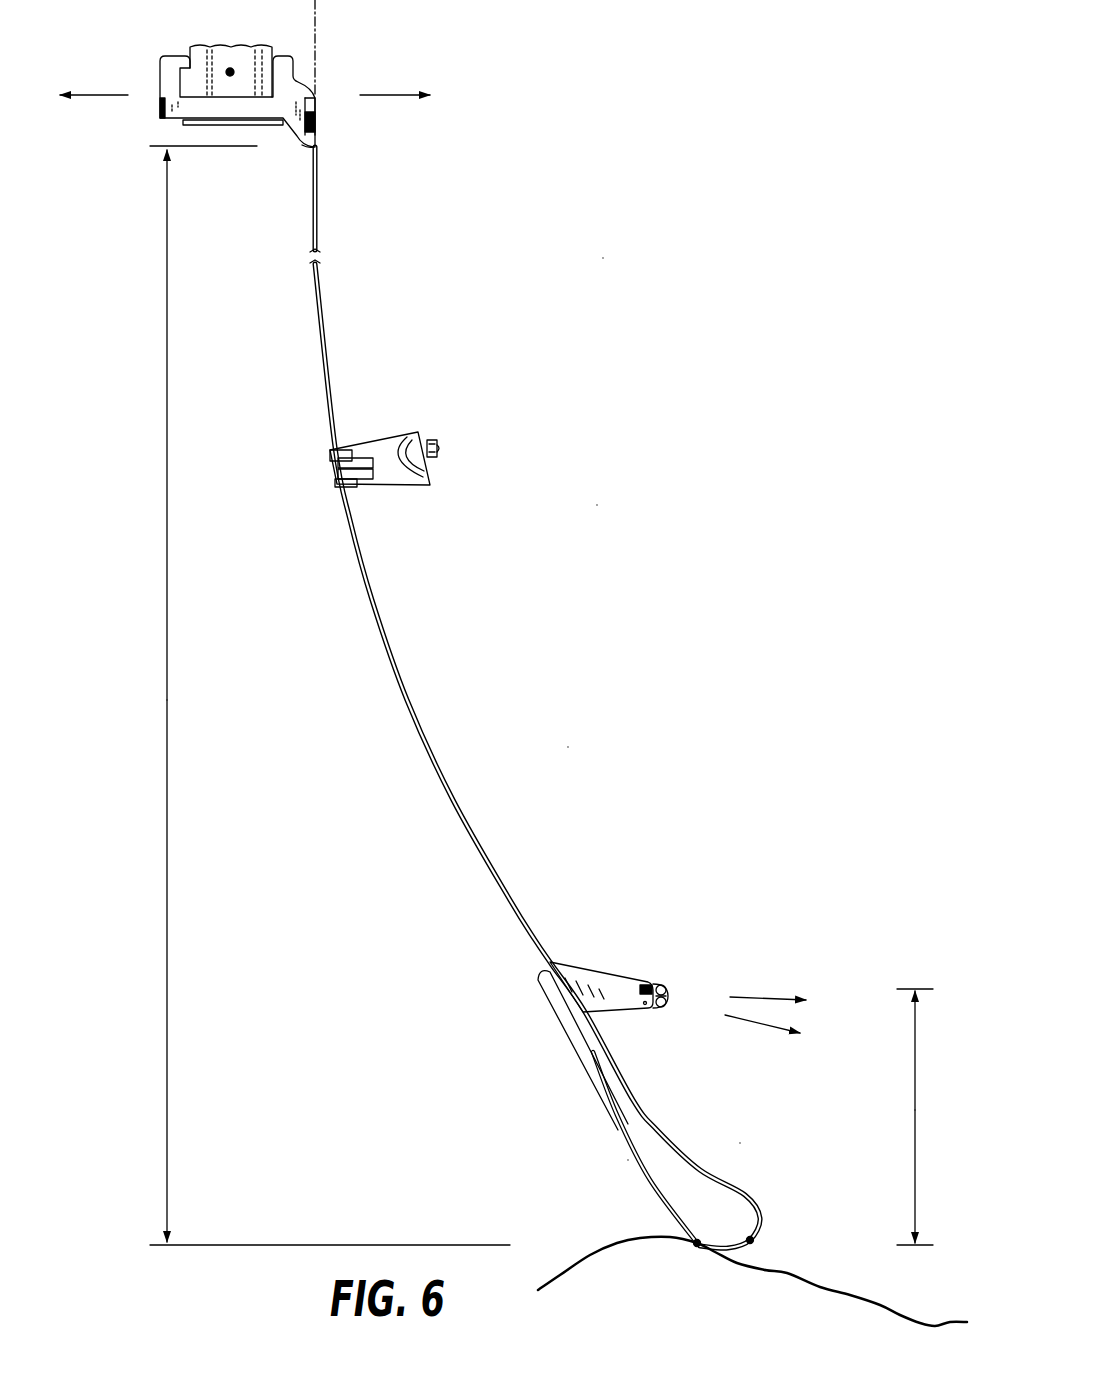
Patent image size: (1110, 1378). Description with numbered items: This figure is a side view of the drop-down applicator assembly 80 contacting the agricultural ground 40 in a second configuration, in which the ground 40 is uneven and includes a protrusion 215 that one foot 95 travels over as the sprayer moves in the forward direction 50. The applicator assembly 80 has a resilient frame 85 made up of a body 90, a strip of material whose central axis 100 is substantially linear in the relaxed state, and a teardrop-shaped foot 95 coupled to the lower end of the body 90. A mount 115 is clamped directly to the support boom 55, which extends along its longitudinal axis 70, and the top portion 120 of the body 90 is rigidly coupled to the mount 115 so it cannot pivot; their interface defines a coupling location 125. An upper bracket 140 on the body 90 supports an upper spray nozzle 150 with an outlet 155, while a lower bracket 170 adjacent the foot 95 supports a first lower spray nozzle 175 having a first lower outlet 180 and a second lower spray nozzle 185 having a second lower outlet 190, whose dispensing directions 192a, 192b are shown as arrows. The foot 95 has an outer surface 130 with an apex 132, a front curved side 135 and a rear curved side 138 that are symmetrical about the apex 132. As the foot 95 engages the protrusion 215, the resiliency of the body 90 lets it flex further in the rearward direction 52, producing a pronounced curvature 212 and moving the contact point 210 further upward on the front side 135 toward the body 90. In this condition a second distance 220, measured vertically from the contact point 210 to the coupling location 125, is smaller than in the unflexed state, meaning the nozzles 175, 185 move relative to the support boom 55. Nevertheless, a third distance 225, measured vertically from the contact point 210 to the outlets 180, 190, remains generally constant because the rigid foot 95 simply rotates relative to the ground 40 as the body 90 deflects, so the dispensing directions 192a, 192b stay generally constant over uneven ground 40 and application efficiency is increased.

The ground 40 is at (898, 1308).
The forward direction 50 is at (90, 90).
The rearward direction 52 is at (398, 90).
The support boom 55 is at (241, 43).
The longitudinal axis 70 is at (228, 70).
The applicator assembly 80 is at (605, 257).
The frame 85 is at (599, 504).
The body 90 is at (325, 317).
The foot 95 is at (537, 1002).
The central axis 100 is at (318, 43).
The mount 115 is at (160, 84).
The top portion 120 is at (320, 108).
The coupling location 125 is at (331, 138).
The outer surface 130 is at (617, 1115).
The apex 132 is at (754, 1241).
The front curved side 135 is at (626, 1161).
The rear curved side 138 is at (743, 1141).
The upper bracket 140 is at (378, 432).
The upper spray nozzle 150 is at (426, 437).
The outlet 155 is at (440, 448).
The lower bracket 170 is at (578, 963).
The first lower spray nozzle 175 is at (658, 984).
The first lower outlet 180 is at (667, 991).
The second lower spray nozzle 185 is at (657, 1009).
The second lower outlet 190 is at (667, 1004).
The dispensing direction 192a is at (775, 997).
The dispensing direction 192b is at (760, 1030).
The contact point 210 is at (696, 1248).
The curvature 212 is at (570, 746).
The protrusion 215 is at (639, 1237).
The second distance 220 is at (165, 683).
The third distance 225 is at (917, 1087).